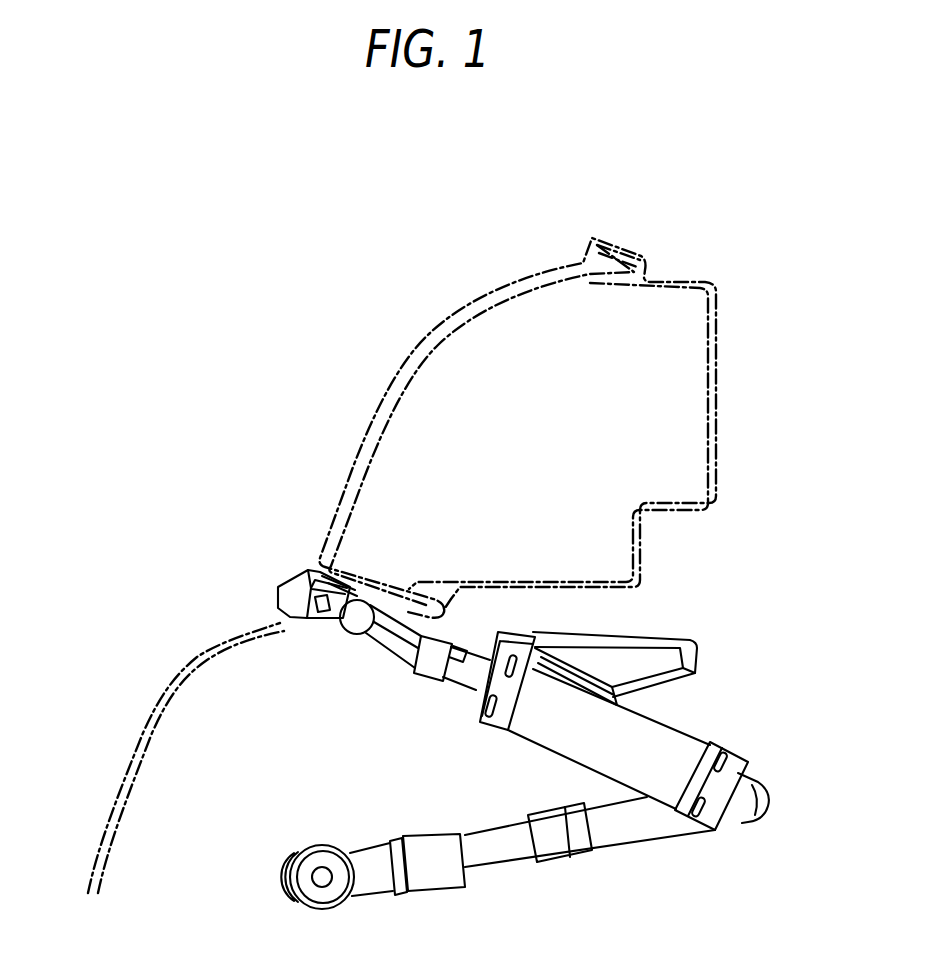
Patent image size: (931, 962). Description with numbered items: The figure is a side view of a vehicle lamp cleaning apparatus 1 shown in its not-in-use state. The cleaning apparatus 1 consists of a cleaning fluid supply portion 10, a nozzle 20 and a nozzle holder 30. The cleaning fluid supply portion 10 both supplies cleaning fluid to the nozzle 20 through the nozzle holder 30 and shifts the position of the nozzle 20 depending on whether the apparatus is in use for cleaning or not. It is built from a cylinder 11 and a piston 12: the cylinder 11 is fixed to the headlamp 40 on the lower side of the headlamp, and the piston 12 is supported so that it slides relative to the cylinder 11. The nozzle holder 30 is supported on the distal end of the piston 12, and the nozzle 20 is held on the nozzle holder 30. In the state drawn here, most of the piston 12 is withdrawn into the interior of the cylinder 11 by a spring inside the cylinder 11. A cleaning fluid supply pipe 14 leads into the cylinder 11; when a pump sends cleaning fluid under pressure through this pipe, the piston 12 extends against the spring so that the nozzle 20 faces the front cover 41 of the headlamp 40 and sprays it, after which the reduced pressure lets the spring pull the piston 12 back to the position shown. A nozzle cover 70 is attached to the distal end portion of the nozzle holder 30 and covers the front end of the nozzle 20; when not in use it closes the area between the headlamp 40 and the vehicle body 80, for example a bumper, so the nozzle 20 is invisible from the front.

The cleaning apparatus 1 is at (243, 727).
The cleaning fluid supply portion 10 is at (698, 733).
The cylinder 11 is at (647, 731).
The piston 12 is at (388, 654).
The cleaning fluid supply pipe 14 is at (497, 853).
The nozzle 20 is at (356, 602).
The nozzle holder 30 is at (360, 636).
The headlamp 40 is at (374, 255).
The front cover 41 is at (388, 399).
The nozzle cover 70 is at (293, 577).
The vehicle body 80 is at (152, 710).